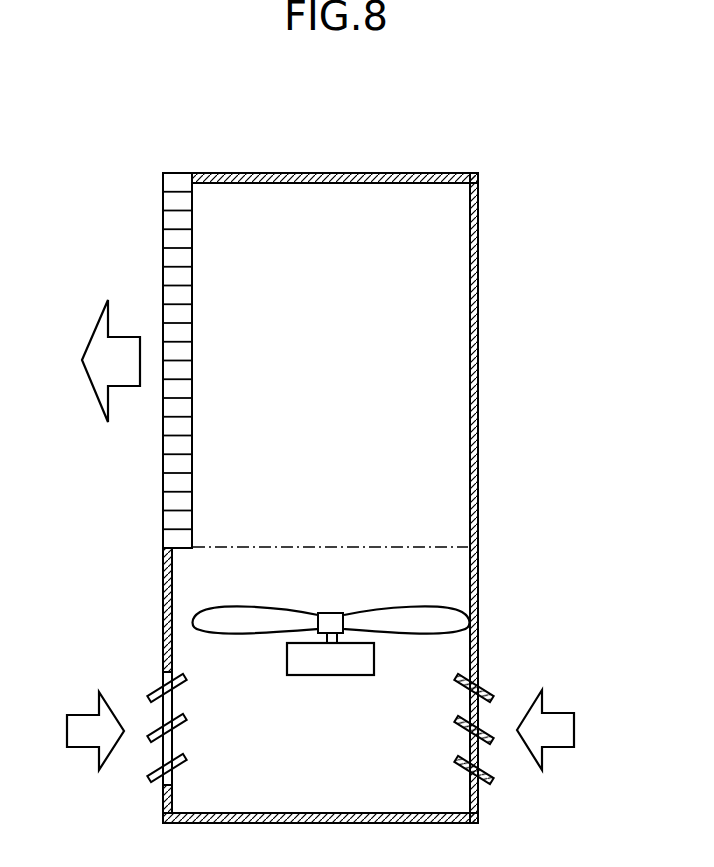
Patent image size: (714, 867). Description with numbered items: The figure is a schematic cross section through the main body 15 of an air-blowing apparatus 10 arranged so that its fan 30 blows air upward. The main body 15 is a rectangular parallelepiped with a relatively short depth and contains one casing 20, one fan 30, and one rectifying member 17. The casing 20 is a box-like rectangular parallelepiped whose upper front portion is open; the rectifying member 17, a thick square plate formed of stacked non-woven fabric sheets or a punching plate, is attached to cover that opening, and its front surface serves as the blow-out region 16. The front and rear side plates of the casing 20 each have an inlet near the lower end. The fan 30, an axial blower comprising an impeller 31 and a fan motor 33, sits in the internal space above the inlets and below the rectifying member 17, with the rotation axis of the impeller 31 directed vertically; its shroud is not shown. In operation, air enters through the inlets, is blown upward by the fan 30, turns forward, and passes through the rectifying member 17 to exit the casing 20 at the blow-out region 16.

The air-blowing apparatus 10 is at (320, 449).
The main body 15 is at (280, 170).
The blow-out region 16 is at (162, 220).
The rectifying member 17 is at (175, 520).
The casing 20 is at (373, 172).
The fan 30 is at (364, 644).
The impeller 31 is at (244, 610).
The fan motor 33 is at (320, 677).